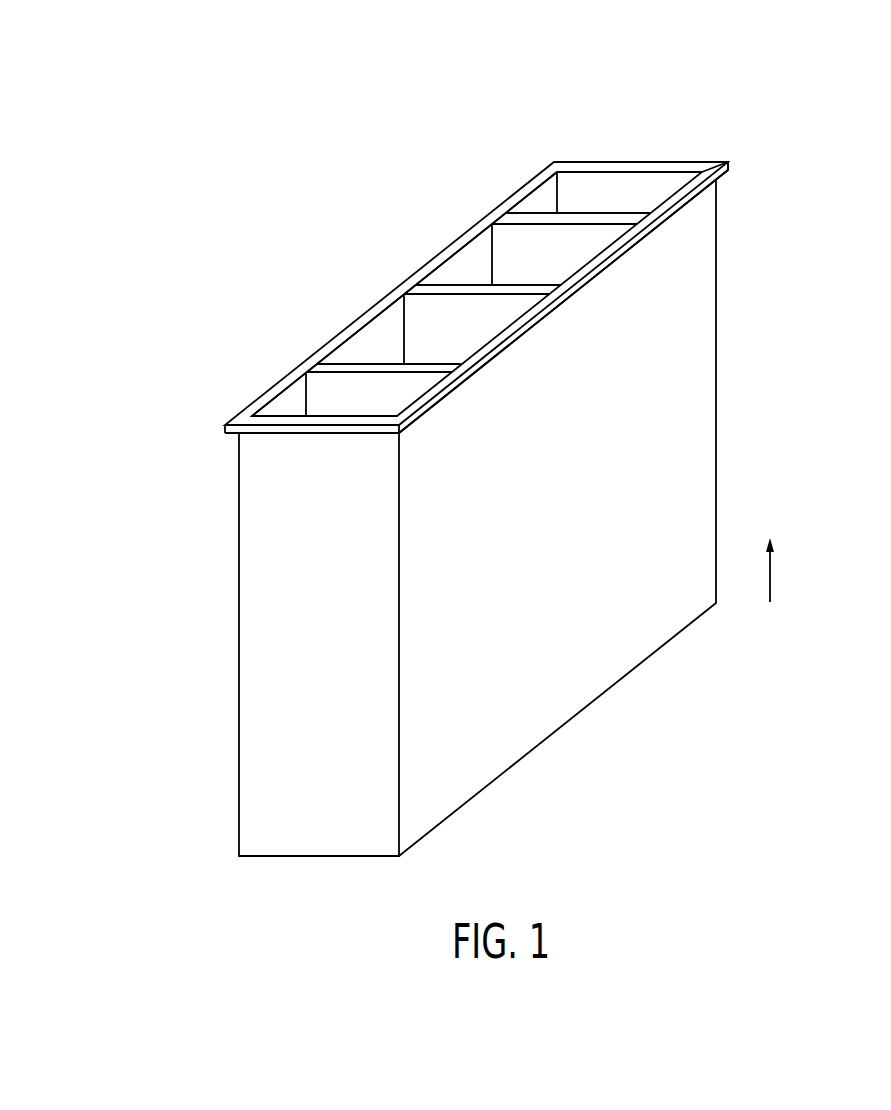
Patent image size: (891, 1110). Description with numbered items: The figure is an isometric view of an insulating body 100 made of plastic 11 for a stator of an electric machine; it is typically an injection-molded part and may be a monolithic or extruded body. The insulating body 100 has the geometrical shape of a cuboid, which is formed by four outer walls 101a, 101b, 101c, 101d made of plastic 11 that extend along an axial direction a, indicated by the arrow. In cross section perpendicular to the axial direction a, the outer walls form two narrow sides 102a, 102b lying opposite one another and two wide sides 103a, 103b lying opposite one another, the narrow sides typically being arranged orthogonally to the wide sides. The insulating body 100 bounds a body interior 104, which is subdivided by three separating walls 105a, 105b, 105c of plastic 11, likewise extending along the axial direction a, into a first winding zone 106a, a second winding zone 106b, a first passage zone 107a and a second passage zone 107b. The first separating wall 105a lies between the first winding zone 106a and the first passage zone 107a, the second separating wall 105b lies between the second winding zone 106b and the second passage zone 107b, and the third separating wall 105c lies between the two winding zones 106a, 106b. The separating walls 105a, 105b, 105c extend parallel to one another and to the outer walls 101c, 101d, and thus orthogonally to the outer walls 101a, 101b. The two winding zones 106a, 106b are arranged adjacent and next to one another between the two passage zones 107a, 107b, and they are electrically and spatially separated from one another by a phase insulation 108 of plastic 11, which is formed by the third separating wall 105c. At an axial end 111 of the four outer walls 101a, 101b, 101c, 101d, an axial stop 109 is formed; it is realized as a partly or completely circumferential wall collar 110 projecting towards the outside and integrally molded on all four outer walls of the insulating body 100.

The insulating body 100 is at (278, 188).
The plastic 11 is at (486, 518).
The outer wall 101a is at (285, 512).
The narrow side 102a is at (254, 644).
The outer wall 101b is at (624, 151).
The narrow side 102b is at (624, 151).
The outer wall 101c is at (376, 294).
The wide side 103a is at (376, 294).
The outer wall 101d is at (695, 298).
The wide side 103b is at (631, 518).
The body interior 104 is at (526, 225).
The first separating wall 105a is at (353, 370).
The second separating wall 105b is at (523, 213).
The third separating wall 105c is at (443, 285).
The first winding zone 106a is at (470, 337).
The second winding zone 106b is at (558, 267).
The first passage zone 107a is at (351, 394).
The second passage zone 107b is at (630, 205).
The phase insulation 108 is at (449, 249).
The axial stop 109 is at (720, 160).
The wall collar 110 is at (773, 131).
The axial end 111 is at (755, 197).
The axial direction a is at (772, 577).